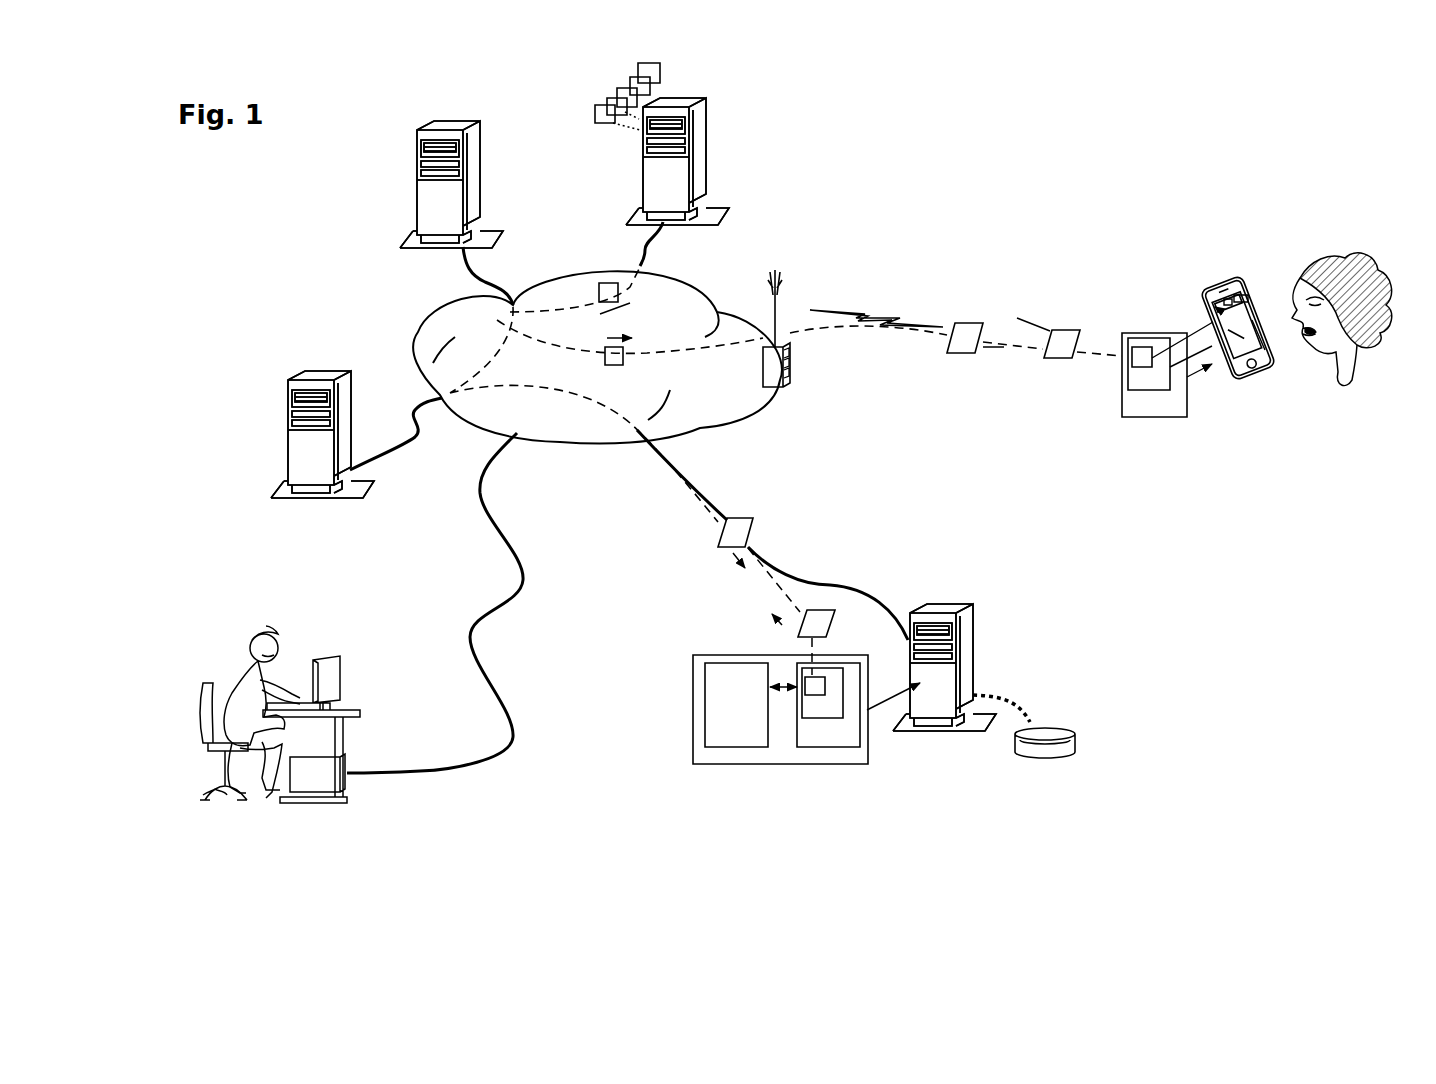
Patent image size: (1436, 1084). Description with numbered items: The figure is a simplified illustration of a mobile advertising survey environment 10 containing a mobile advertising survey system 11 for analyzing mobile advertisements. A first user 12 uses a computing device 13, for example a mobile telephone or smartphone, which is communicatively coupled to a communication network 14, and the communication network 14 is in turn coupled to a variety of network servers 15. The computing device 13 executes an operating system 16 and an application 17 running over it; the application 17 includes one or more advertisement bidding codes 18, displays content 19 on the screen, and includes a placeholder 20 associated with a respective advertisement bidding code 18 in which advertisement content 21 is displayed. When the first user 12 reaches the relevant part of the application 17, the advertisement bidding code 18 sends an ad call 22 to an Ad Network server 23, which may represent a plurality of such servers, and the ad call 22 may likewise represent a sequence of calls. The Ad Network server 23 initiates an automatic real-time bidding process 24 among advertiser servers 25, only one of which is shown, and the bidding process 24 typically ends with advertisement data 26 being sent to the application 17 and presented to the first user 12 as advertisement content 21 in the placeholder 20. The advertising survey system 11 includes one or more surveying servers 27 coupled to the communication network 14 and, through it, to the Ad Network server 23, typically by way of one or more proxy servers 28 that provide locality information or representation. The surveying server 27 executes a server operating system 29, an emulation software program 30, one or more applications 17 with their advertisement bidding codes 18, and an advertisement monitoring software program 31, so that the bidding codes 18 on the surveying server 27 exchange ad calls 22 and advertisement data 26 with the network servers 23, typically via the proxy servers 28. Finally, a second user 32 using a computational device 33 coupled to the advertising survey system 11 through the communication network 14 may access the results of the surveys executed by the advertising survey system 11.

The mobile advertising survey environment 10 is at (879, 89).
The mobile advertising survey system 11 is at (1006, 606).
The first user 12 is at (1343, 258).
The computing device 13 is at (1235, 381).
The communication network 14 is at (420, 326).
The network servers 15 is at (480, 207).
The operating system 16 is at (1160, 419).
The application 17 is at (1127, 386).
The advertisement bidding code 18 is at (1142, 345).
The content 19 is at (1265, 358).
The placeholder 20 is at (1223, 300).
The advertisement content 21 is at (1240, 298).
The ad call 22 is at (1068, 330).
The Ad Network server 23 is at (480, 174).
The real-time bidding process 24 is at (574, 306).
The advertiser server 25 is at (706, 181).
The advertisement data 26 is at (600, 105).
The surveying server 27 is at (975, 684).
The proxy server 28 is at (288, 397).
The server operating system 29 is at (790, 766).
The emulation software program 30 is at (830, 748).
The advertisement monitoring software program 31 is at (720, 748).
The second user 32 is at (262, 628).
The computational device 33 is at (346, 762).